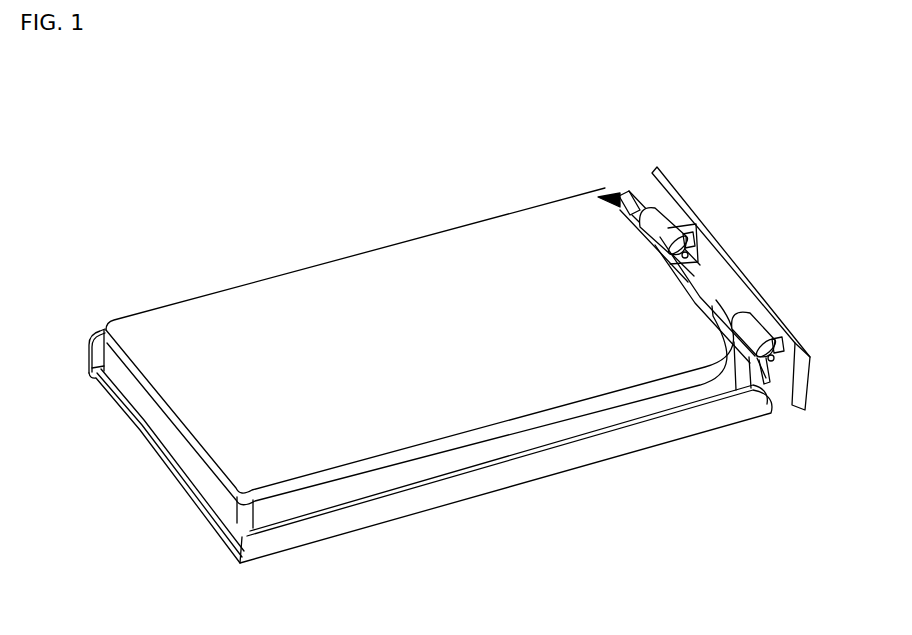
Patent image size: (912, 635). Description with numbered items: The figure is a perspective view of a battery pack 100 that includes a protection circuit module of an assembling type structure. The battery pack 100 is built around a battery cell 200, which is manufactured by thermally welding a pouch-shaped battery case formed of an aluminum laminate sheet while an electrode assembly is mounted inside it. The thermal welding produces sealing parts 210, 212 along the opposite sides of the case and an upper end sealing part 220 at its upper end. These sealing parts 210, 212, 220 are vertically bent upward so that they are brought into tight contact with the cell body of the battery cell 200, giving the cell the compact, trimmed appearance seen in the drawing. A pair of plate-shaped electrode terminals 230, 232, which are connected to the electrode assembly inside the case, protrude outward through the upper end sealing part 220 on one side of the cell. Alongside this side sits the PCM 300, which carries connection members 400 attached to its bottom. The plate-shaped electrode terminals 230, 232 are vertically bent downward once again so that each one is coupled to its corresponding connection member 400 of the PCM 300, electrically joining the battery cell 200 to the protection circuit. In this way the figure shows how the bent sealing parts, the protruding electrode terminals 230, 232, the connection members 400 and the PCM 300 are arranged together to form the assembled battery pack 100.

The battery pack 100 is at (83, 124).
The battery cell 200 is at (373, 248).
The sealing part 210 is at (502, 480).
The sealing part 212 is at (97, 338).
The upper end sealing part 220 is at (775, 386).
The plate-shaped electrode terminal 230 is at (698, 293).
The plate-shaped electrode terminal 232 is at (657, 220).
The protection circuit module (PCM) 300 is at (730, 253).
The connection member 400 is at (763, 360).